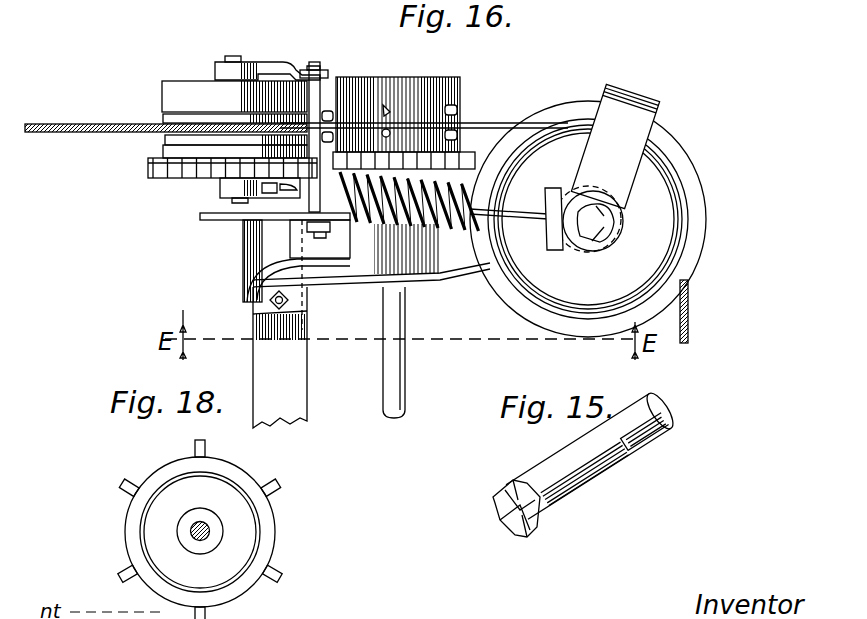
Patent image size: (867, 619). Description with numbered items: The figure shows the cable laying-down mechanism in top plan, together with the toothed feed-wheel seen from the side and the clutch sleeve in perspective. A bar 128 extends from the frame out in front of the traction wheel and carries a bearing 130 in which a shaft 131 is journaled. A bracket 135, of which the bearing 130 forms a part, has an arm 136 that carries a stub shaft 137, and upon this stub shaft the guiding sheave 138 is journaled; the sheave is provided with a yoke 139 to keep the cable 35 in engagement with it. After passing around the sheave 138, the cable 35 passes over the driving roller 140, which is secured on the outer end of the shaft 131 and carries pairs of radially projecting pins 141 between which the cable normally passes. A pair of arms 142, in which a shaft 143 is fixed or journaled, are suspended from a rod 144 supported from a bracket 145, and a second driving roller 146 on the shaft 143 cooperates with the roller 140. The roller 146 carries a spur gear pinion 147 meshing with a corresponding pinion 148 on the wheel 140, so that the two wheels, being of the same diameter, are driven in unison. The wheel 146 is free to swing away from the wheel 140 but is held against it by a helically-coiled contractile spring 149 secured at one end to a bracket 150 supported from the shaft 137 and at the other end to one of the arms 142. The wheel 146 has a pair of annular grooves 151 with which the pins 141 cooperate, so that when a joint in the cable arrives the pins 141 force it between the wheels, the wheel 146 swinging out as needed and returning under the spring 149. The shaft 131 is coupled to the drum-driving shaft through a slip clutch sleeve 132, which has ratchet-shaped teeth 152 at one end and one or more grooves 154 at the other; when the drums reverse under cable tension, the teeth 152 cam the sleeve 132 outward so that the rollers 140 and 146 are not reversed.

In FIG. 16, the arms 142 is at (225, 70).
In FIG. 16, the shaft 143 is at (244, 50).
In FIG. 16, the driving roller 146 is at (180, 90).
In FIG. 16, the annular grooves 151 is at (170, 118).
In FIG. 16, the cable 35 is at (60, 133).
In FIG. 16, the spur gear pinion 147 is at (168, 173).
In FIG. 16, the rod 144 is at (327, 79).
In FIG. 16, the driving roller 140 is at (460, 75).
In FIG. 18, the driving roller 140 is at (237, 488).
In FIG. 16, the radially projecting pins 141 is at (333, 112).
In FIG. 18, the radially projecting pins 141 is at (125, 575).
In FIG. 16, the pinion 148 is at (467, 150).
In FIG. 16, the bearing 130 is at (425, 268).
In FIG. 16, the bracket 150 is at (557, 190).
In FIG. 16, the stub shaft 137 is at (600, 230).
In FIG. 16, the arm 136 is at (540, 258).
In FIG. 16, the yoke 139 is at (652, 122).
In FIG. 16, the guiding sheave 138 is at (684, 192).
In FIG. 16, the bracket 145 is at (270, 242).
In FIG. 16, the helically-coiled contractile spring 149 is at (362, 210).
In FIG. 16, the bracket 135 is at (347, 270).
In FIG. 16, the bar 128 is at (298, 390).
In FIG. 16, the shaft 131 is at (402, 396).
In FIG. 18, the shaft 131 is at (201, 540).
In FIG. 15, the clutch sleeve 132 is at (548, 472).
In FIG. 15, the grooves 154 is at (663, 425).
In FIG. 15, the ratchet-shaped teeth 152 is at (533, 535).